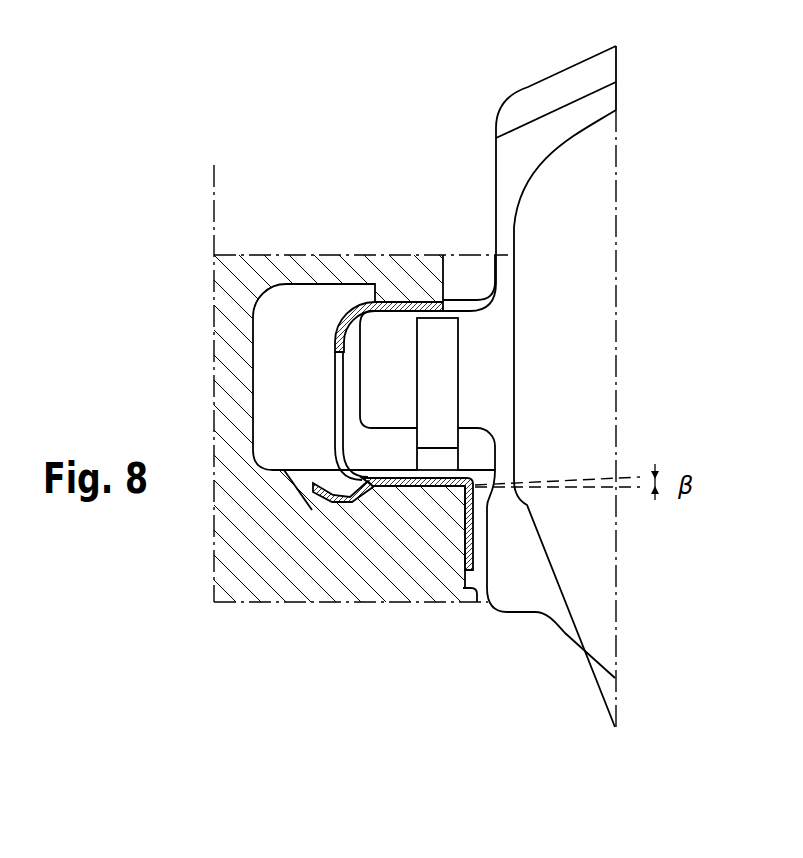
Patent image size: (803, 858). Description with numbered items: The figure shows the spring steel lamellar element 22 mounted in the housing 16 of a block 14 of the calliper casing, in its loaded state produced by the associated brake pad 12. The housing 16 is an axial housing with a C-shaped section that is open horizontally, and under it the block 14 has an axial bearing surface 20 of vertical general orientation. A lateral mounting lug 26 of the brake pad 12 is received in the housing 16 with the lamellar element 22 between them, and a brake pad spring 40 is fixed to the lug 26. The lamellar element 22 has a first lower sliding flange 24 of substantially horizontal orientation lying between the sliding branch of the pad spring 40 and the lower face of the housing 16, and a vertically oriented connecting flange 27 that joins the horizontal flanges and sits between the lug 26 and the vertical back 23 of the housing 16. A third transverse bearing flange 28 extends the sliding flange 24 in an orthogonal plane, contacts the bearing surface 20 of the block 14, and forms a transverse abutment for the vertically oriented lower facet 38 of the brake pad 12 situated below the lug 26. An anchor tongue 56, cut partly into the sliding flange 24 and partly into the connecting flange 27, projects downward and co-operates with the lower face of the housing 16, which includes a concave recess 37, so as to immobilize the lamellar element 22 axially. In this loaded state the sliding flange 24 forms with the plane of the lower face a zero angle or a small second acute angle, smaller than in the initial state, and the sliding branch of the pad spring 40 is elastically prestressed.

The brake pad 12 is at (620, 93).
The block 14 is at (352, 582).
The housing 16 is at (277, 333).
The axial bearing surface 20 is at (473, 593).
The lamellar element 22 is at (332, 319).
The vertical back 23 is at (253, 398).
The first lower sliding flange 24 is at (422, 487).
The lateral mounting lug 26 is at (380, 342).
The vertical connecting flange 27 is at (337, 378).
The third transverse bearing flange 28 is at (473, 555).
The recess 37 is at (302, 478).
The lower facet 38 is at (480, 527).
The brake pad spring 40 is at (447, 398).
The anchor tongue 56 is at (316, 498).